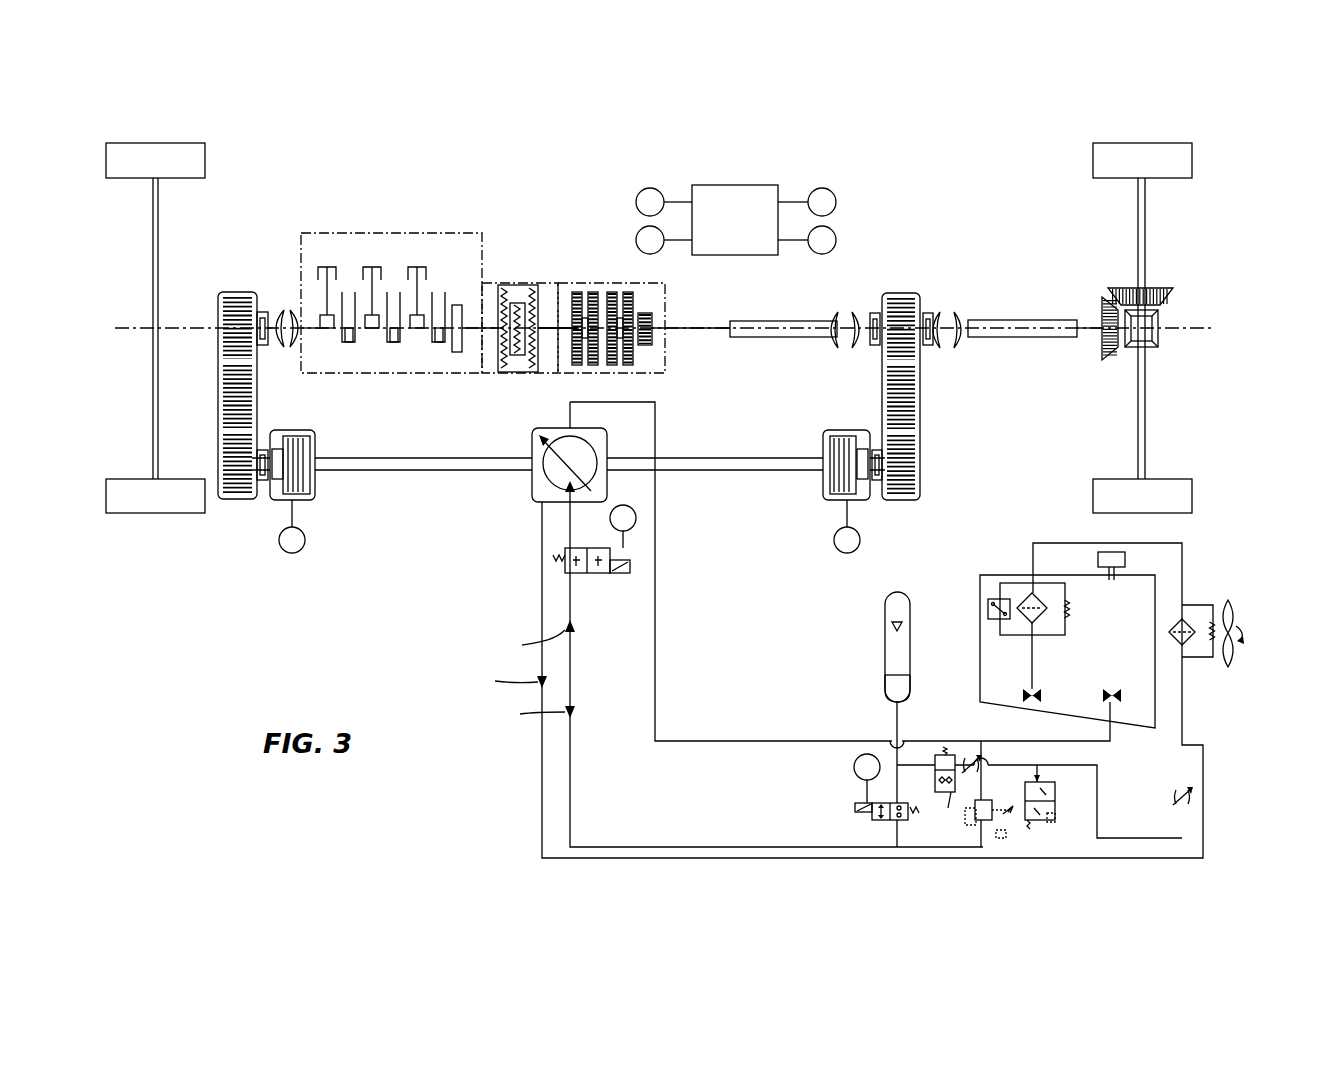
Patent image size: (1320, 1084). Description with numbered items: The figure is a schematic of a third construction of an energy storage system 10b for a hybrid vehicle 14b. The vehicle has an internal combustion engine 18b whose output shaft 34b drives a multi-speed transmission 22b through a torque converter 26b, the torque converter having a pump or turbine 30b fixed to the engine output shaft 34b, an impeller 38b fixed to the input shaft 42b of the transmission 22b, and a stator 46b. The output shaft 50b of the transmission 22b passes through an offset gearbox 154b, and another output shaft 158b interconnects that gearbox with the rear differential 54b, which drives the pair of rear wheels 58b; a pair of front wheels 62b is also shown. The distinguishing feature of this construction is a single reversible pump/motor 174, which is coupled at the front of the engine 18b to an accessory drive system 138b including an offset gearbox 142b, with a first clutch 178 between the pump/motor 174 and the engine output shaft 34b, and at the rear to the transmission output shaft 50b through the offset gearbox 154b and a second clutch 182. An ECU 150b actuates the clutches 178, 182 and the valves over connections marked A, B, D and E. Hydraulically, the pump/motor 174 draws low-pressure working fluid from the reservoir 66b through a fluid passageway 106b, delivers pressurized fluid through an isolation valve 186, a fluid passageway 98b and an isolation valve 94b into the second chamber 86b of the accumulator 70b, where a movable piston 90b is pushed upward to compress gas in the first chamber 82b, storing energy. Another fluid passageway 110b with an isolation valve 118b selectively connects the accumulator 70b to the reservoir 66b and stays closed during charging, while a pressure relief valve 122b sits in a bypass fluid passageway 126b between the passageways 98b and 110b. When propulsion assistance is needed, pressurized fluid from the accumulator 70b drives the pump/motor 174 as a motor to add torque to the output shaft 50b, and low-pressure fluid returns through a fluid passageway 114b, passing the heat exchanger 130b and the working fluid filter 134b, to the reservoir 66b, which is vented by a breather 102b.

The energy storage system 10b is at (1152, 868).
The hybrid vehicle 14b is at (1237, 199).
The internal combustion engine 18b is at (392, 216).
The multi-speed transmission 22b is at (610, 256).
The torque converter 26b is at (532, 230).
The pump or turbine 30b is at (506, 286).
The output shaft 34b is at (459, 306).
The impeller 38b is at (533, 286).
The input shaft 42b is at (551, 349).
The stator 46b is at (516, 356).
The output shaft 50b is at (778, 320).
The rear differential 54b is at (1096, 369).
The rear wheels 58b is at (1108, 165).
The front wheels 62b is at (172, 165).
The reservoir 66b is at (980, 587).
The accumulator 70b is at (912, 605).
The first chamber 82b is at (911, 645).
The second chamber 86b is at (886, 693).
The movable piston 90b is at (890, 672).
The isolation valve 94b is at (900, 821).
The fluid passageway 98b is at (900, 728).
The breather 102b is at (1098, 560).
The fluid passageway 106b is at (1078, 740).
The fluid passageway 110b is at (960, 758).
The fluid passageway 114b is at (541, 786).
The isolation valve 118b is at (935, 777).
The pressure relief valve 122b is at (1033, 842).
The fluid passageway 126b is at (984, 783).
The heat exchanger 130b is at (1210, 673).
The working fluid filter 134b is at (1079, 615).
The accessory drive system 138b is at (240, 282).
The offset gearbox 142b is at (215, 404).
The ECU 150b is at (733, 243).
The offset gearbox 154b is at (922, 388).
The output shaft 158b is at (1033, 319).
The reversible pump/motor 174 is at (532, 492).
The first clutch 178 is at (316, 441).
The second clutch 182 is at (843, 428).
The isolation valve 186 is at (602, 574).